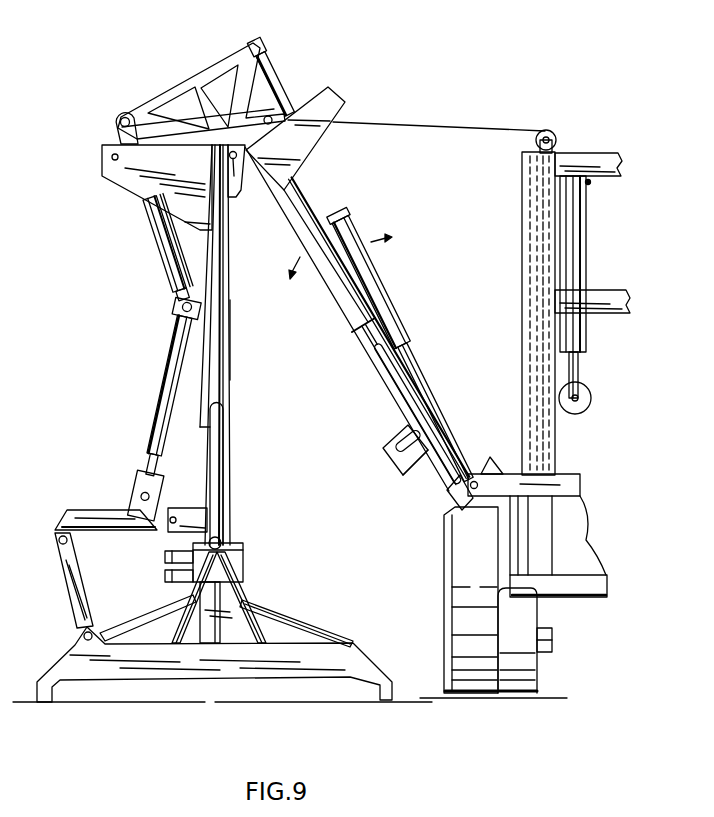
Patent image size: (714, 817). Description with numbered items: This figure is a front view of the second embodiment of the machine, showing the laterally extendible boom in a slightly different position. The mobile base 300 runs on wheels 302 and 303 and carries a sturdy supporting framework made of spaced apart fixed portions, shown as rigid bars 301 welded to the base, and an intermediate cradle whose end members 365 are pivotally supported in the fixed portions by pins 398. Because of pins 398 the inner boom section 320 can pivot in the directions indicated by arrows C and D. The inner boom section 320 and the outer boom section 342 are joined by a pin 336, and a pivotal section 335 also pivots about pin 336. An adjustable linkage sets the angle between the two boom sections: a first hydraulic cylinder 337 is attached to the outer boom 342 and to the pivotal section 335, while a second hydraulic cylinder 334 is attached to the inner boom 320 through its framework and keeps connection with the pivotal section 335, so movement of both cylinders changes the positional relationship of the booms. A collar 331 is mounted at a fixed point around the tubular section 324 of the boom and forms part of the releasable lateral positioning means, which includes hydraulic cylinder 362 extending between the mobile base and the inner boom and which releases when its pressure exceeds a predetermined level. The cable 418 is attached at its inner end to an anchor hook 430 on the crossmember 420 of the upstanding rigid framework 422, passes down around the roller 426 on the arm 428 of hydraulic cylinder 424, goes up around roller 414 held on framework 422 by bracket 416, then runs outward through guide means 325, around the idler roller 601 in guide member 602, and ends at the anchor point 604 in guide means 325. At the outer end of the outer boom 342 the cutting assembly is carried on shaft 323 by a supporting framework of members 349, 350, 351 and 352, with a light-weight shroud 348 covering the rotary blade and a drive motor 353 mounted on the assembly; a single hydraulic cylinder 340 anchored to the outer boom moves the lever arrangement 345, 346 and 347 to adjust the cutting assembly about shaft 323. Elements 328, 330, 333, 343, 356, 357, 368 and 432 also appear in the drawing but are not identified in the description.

The mobile base 300 is at (583, 616).
The rigid bar 301 is at (548, 552).
The wheel 302 is at (527, 674).
The wheel 303 is at (460, 590).
The inner boom section 320 is at (318, 303).
The shaft 323 is at (222, 539).
The tubular section 324 is at (283, 214).
The guide means 325 is at (332, 100).
The end bracket 328 is at (386, 446).
The bracket bottom 330 is at (402, 468).
The collar 331 is at (367, 342).
The strut 333 is at (270, 80).
The second hydraulic cylinder 334 is at (348, 230).
The pivotal section 335 is at (197, 58).
The pin 336 is at (239, 195).
The first hydraulic cylinder 337 is at (162, 244).
The hydraulic cylinder 340 is at (164, 382).
The outer boom section 342 is at (243, 332).
The mast 343 is at (231, 482).
The lever arrangement 345 is at (142, 504).
The lever arrangement 346 is at (87, 516).
The lever arrangement 347 is at (63, 584).
The shroud 348 is at (56, 666).
The supporting framework member 349 is at (137, 620).
The supporting framework member 350 is at (288, 622).
The supporting framework member 351 is at (238, 596).
The supporting framework member 352 is at (244, 553).
The drive motor 353 is at (244, 566).
The hose connections 356 is at (164, 553).
The mounting block 357 is at (189, 512).
The hydraulic cylinder 362 is at (398, 454).
The end member 365 is at (448, 493).
The cylinder rod 368 is at (433, 420).
The pin 398 is at (475, 481).
The roller 414 is at (553, 133).
The bracket 416 is at (556, 146).
The cable 418 is at (393, 121).
The crossmember 420 is at (603, 160).
The upstanding rigid framework 422 is at (528, 436).
The hydraulic cylinder 424 is at (575, 259).
The roller 426 is at (578, 410).
The arm 428 is at (580, 378).
The anchor hook 430 is at (593, 186).
The lower arm 432 is at (613, 292).
The idler roller 601 is at (114, 139).
The guide member 602 is at (130, 177).
The anchor point 604 is at (274, 113).
The arrow C is at (291, 274).
The arrow D is at (388, 234).